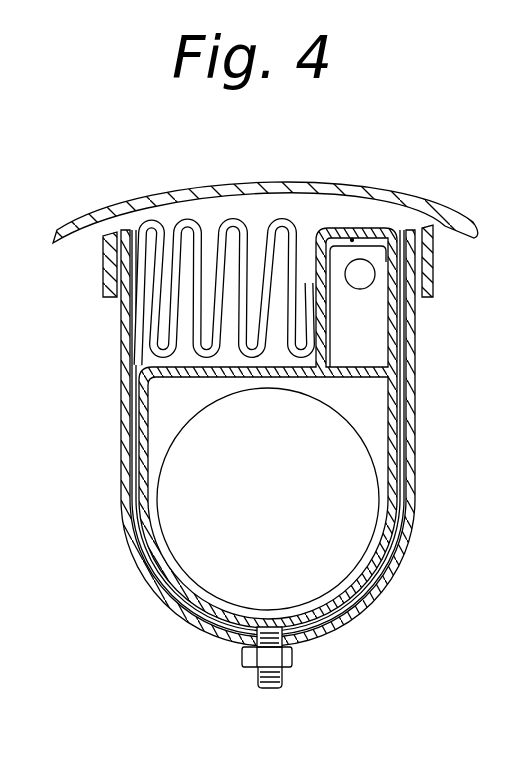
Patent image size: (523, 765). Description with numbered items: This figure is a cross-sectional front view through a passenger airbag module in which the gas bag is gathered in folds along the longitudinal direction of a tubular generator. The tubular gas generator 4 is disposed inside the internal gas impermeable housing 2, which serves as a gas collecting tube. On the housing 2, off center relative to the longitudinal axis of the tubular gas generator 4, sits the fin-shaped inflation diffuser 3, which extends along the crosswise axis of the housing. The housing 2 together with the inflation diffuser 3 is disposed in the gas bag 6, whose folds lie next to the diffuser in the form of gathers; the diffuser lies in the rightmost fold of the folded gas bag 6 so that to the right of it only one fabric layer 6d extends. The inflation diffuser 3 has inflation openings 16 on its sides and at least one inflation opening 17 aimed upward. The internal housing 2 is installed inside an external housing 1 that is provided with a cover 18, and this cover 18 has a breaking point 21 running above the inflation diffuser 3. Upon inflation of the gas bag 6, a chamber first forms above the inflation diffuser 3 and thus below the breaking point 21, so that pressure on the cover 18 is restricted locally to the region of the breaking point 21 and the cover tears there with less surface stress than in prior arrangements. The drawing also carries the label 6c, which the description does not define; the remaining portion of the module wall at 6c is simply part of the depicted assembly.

The external housing 1 is at (387, 583).
The internal gas impermeable housing 2 is at (393, 512).
The fin-shaped inflation diffuser 3 is at (370, 318).
The tubular gas generator 4 is at (357, 465).
The gas bag 6 is at (127, 375).
The housing flange 6c is at (363, 228).
The fabric layer 6d is at (418, 371).
The inflation openings 16 is at (350, 297).
The inflation opening 17 is at (352, 240).
The cover 18 is at (463, 217).
The breaking point 21 is at (362, 229).